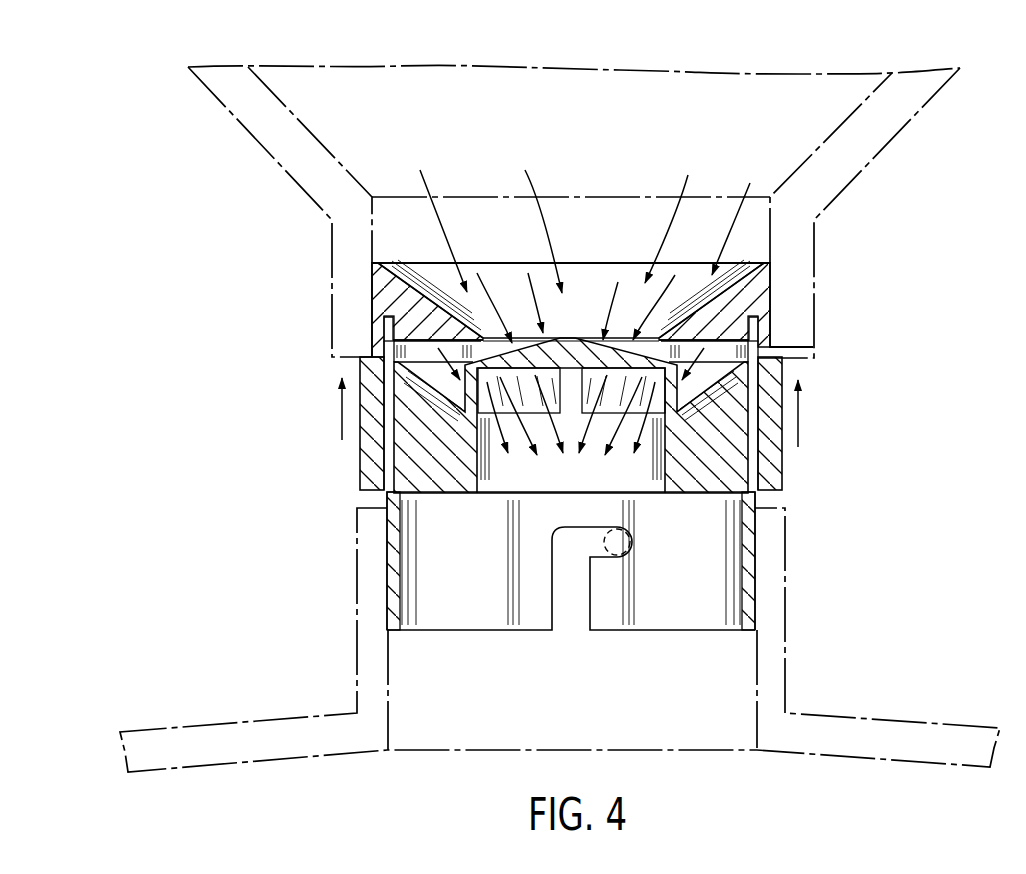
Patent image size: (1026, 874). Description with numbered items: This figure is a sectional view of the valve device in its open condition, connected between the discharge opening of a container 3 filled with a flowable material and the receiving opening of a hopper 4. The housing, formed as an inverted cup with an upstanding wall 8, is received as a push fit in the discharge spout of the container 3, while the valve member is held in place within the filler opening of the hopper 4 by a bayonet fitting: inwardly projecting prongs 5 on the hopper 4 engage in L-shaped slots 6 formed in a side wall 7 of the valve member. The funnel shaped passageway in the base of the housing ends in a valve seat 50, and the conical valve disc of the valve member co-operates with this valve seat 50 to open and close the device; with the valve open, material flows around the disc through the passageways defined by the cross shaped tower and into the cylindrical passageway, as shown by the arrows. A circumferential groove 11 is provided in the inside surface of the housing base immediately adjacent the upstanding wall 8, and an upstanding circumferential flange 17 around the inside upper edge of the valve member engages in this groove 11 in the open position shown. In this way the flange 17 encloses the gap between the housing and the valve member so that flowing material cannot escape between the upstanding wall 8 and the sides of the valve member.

The container 3 is at (283, 148).
The valve seat 50 is at (481, 338).
The circumferential groove 11 is at (756, 325).
The upstanding circumferential flange 17 is at (790, 347).
The upstanding wall 8 is at (783, 463).
The side wall 7 is at (387, 552).
The L-shaped slots 6 is at (572, 620).
The prongs 5 is at (623, 545).
The hopper 4 is at (262, 730).